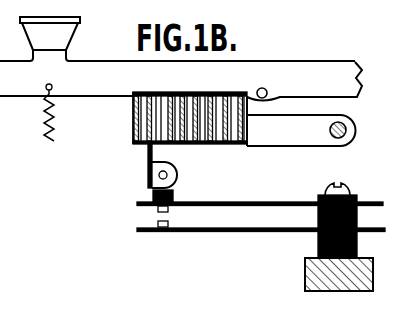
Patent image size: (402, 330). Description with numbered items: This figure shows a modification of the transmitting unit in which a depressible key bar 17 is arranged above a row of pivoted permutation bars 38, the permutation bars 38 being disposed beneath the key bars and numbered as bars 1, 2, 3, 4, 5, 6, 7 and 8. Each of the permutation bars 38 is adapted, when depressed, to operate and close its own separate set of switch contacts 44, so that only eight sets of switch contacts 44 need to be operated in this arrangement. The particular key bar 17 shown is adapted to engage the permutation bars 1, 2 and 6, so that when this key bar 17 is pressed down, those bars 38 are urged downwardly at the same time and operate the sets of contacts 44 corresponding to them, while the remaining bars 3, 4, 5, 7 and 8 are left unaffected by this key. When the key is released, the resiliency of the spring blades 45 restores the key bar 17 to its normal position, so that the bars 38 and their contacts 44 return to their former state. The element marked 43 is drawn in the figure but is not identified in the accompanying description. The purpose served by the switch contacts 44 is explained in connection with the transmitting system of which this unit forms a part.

The key bar 17 is at (102, 86).
The pivoted permutation bars 38 is at (196, 130).
The spring 43 is at (59, 127).
The switch contacts 44 is at (157, 218).
The spring blades 45 is at (263, 228).
The permutation bar 1 is at (135, 129).
The permutation bar 2 is at (146, 129).
The permutation bar 3 is at (167, 129).
The permutation bar 4 is at (181, 129).
The permutation bar 5 is at (197, 129).
The permutation bar 6 is at (211, 129).
The permutation bar 7 is at (227, 129).
The permutation bar 8 is at (241, 129).